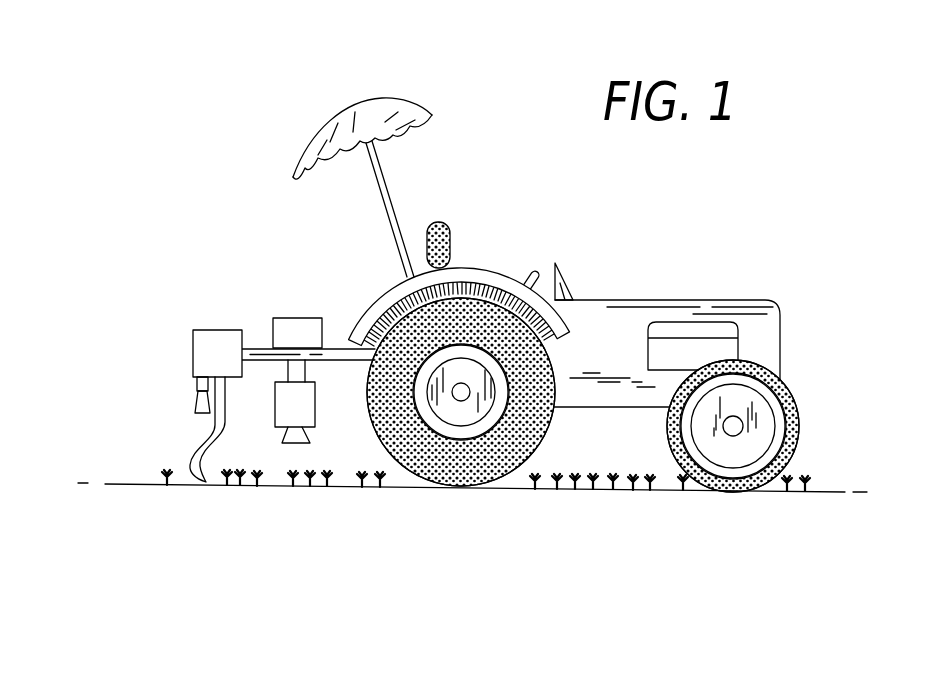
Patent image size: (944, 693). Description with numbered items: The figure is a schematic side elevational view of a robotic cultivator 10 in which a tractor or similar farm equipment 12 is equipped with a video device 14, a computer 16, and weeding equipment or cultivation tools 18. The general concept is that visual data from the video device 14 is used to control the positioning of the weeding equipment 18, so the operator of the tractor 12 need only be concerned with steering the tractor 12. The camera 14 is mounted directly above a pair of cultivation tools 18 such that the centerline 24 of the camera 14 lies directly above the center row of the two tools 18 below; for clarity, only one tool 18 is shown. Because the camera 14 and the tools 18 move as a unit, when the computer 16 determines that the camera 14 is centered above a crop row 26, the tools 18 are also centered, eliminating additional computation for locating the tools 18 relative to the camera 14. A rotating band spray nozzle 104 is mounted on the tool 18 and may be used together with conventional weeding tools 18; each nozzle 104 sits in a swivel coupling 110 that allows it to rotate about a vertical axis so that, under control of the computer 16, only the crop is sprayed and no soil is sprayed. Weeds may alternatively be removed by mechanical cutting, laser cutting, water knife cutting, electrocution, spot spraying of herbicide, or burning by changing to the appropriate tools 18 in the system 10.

The robotic cultivator 10 is at (205, 218).
The tractor 12 is at (598, 263).
The video device 14 is at (315, 398).
The computer 16 is at (294, 317).
The weeding equipment 18 is at (199, 330).
The swivel coupling 110 is at (193, 393).
The band spray nozzle 104 is at (193, 412).
The centerline 24 is at (147, 478).
The crop row 26 is at (573, 489).